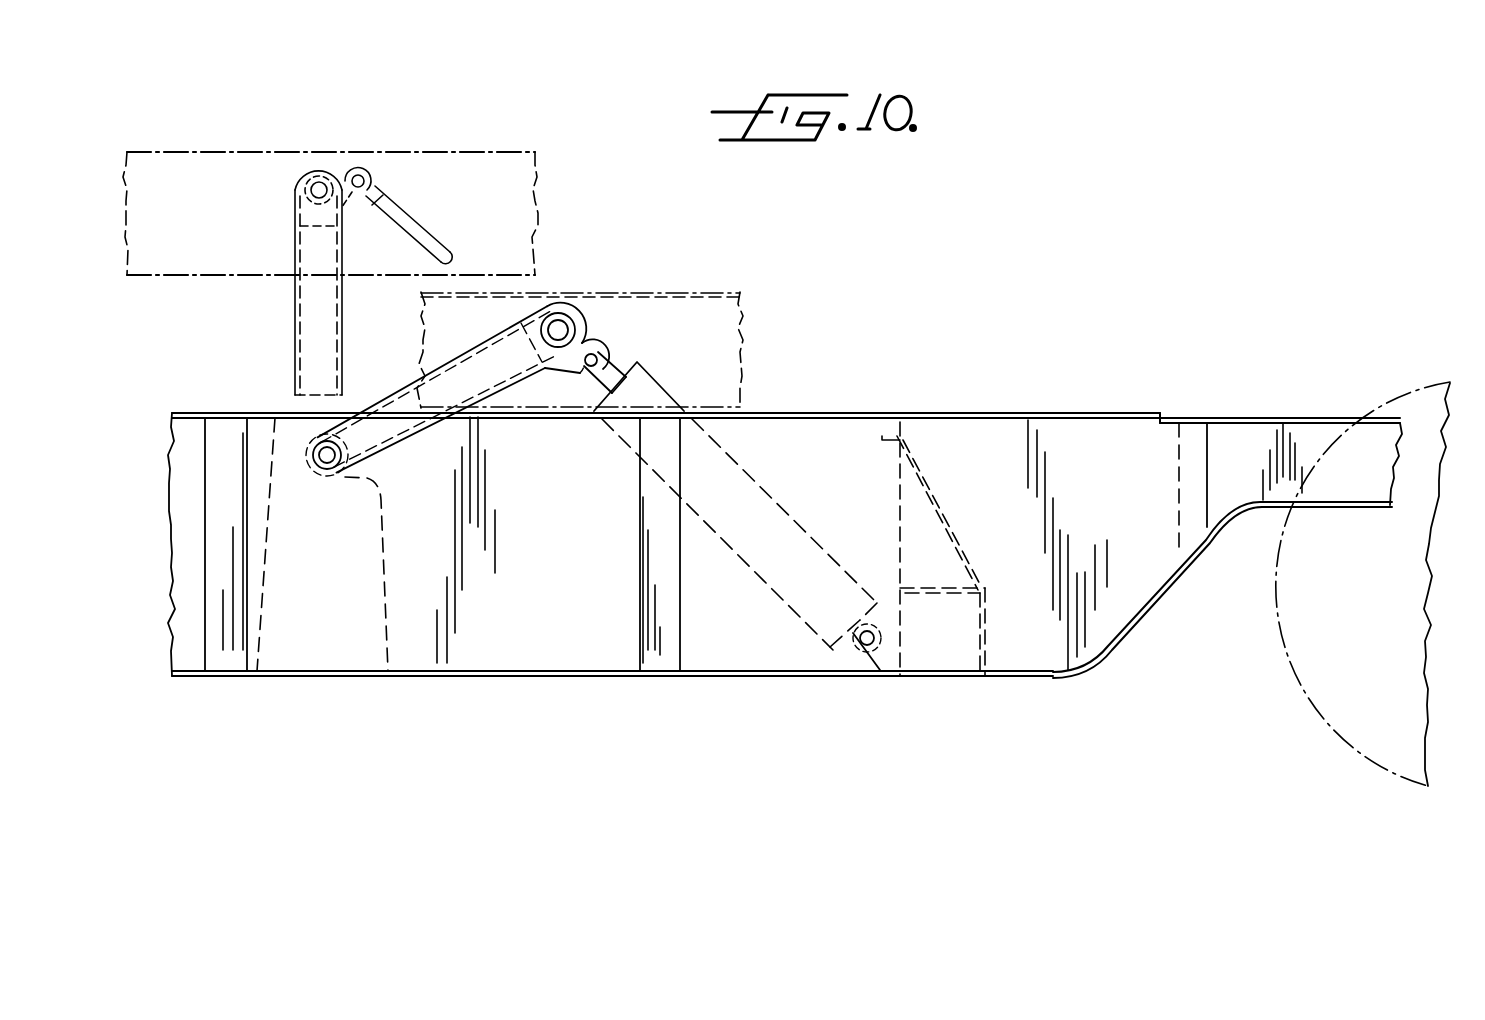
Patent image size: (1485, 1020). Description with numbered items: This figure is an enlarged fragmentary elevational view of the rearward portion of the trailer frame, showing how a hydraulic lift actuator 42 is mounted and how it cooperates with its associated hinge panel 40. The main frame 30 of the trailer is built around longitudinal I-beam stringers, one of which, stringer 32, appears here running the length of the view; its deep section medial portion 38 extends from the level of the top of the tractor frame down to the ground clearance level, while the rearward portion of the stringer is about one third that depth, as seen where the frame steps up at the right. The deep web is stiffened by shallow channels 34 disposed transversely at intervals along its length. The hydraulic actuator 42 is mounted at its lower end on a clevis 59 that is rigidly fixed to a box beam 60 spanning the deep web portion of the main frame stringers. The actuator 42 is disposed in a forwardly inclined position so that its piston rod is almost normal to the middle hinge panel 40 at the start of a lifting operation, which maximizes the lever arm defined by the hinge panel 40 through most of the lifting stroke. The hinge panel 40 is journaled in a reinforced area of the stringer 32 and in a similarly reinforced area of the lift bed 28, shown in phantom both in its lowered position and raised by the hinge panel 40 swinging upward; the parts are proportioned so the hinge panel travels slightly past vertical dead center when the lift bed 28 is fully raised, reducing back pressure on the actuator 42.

The lift bed 28 is at (690, 288).
The main frame 30 is at (1008, 398).
The longitudinal stringer 32 is at (465, 678).
The shallow channel 34 is at (214, 538).
The deep section medial portion 38 is at (845, 432).
The middle hinge panel 40 is at (298, 313).
The hydraulic lift actuator 42 is at (645, 392).
The clevis 59 is at (877, 672).
The box beam 60 is at (985, 672).